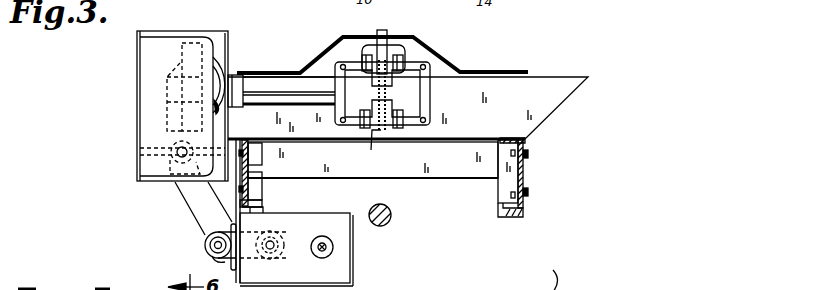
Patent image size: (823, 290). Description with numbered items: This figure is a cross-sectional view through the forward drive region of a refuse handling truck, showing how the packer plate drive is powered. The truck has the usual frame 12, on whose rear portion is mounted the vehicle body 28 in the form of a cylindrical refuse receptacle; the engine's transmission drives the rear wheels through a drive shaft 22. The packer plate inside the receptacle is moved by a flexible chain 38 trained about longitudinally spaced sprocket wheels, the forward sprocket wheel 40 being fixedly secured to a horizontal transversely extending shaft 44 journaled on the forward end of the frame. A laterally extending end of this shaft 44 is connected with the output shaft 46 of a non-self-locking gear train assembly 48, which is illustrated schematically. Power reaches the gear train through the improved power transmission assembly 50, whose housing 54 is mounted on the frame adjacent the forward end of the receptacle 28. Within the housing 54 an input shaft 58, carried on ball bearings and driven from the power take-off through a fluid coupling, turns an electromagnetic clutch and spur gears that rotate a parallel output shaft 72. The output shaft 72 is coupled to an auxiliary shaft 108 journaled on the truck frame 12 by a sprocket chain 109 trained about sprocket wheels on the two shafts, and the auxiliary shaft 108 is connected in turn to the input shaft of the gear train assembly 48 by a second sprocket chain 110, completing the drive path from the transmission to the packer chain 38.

The frame 12 is at (262, 184).
The drive shaft 22 is at (391, 212).
The vehicle body 28 is at (539, 279).
The flexible chain 38 is at (371, 150).
The forward sprocket wheel 40 is at (390, 93).
The shaft 44 is at (301, 72).
The output shaft 46 is at (232, 108).
The gear train assembly 48 is at (137, 86).
The power transmission assembly 50 is at (325, 246).
The housing 54 is at (350, 270).
The input shaft 58 is at (319, 254).
The output shaft 72 is at (280, 243).
The auxiliary shaft 108 is at (205, 246).
The sprocket chain 109 is at (190, 208).
The second sprocket chain 110 is at (223, 262).